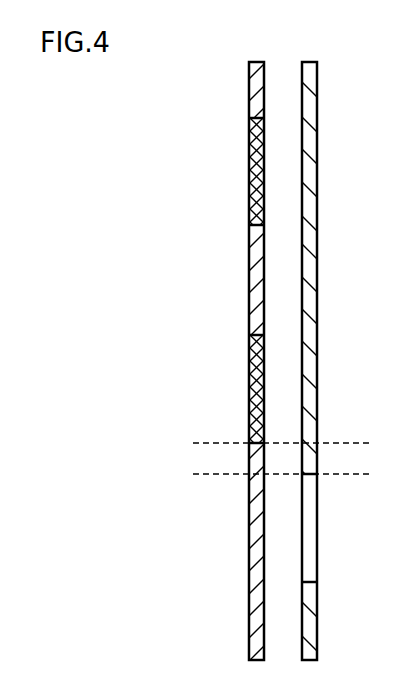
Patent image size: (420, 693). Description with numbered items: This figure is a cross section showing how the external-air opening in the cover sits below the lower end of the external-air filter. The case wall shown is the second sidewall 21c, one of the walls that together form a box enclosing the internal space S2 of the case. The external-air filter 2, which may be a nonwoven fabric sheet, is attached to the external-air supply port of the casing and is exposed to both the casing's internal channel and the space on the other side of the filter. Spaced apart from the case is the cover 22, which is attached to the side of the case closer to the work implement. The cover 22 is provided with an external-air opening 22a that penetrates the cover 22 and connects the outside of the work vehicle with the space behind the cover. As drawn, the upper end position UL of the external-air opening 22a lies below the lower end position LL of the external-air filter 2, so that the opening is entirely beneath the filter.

The external-air filter 2 is at (256, 166).
The second sidewall 21c is at (255, 282).
The cover 22 is at (310, 395).
The external-air opening 22a is at (307, 478).
The internal space S2 is at (143, 145).
The lower end position LL is at (281, 445).
The upper end position UL is at (295, 478).